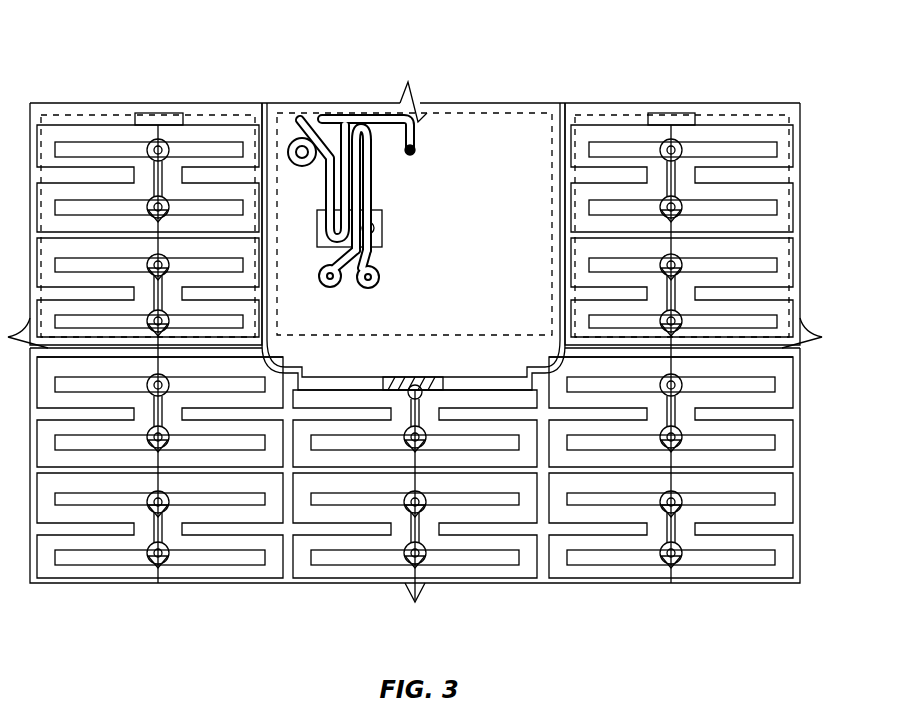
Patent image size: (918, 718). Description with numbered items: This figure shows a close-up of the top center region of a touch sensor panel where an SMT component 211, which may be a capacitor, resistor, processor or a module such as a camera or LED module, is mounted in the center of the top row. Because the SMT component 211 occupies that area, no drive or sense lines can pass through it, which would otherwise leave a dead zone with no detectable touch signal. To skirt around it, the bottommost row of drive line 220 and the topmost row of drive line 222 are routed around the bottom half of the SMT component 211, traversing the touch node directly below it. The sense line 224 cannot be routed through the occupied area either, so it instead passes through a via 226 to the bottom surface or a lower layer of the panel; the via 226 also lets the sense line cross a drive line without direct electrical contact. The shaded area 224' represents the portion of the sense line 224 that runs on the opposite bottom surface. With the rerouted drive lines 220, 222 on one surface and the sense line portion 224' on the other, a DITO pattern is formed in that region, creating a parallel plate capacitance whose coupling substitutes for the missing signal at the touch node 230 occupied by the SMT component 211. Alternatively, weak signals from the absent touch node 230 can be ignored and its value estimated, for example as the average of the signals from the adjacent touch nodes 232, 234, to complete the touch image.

The SMT component 211 is at (319, 103).
The drive line 220 is at (768, 238).
The drive line 222 is at (760, 470).
The sense line 224 is at (424, 511).
The shaded area 224' is at (386, 372).
The via 226 is at (413, 520).
The touch node 230 is at (462, 106).
The touch node 232 is at (203, 103).
The touch node 234 is at (642, 104).